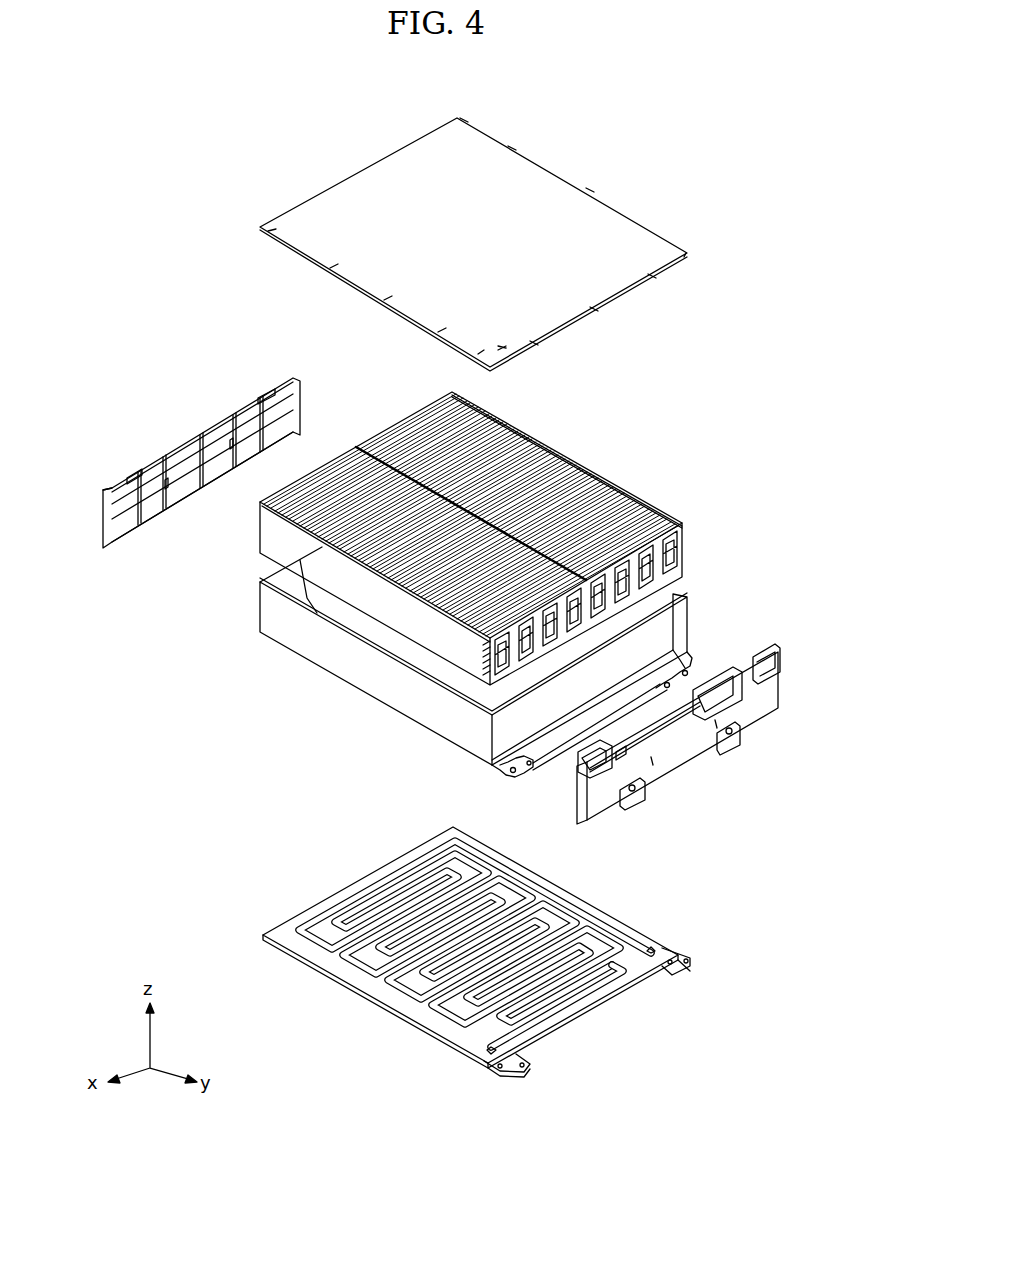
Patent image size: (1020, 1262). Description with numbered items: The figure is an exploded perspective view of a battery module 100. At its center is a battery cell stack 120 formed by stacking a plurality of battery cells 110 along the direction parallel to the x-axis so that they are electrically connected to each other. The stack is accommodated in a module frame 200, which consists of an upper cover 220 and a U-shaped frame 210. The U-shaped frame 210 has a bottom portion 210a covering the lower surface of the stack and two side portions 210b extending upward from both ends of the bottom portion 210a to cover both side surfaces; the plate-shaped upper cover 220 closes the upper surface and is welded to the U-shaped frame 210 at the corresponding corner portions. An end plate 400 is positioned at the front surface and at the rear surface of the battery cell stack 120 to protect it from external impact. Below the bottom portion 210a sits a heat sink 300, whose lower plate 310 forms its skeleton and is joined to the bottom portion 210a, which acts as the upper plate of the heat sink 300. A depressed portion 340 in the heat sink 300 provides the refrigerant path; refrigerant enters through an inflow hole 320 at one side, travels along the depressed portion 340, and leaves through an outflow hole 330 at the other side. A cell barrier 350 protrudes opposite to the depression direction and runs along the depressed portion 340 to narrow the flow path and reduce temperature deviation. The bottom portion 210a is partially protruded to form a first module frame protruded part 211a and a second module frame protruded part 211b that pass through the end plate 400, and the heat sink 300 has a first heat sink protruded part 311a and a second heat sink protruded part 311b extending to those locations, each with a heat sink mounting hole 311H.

The battery module 100 is at (207, 128).
The battery cell 110 is at (471, 538).
The battery cell stack 120 is at (600, 505).
The module frame 200 is at (750, 386).
The U-shaped frame 210 is at (270, 716).
The bottom portion 210a is at (525, 705).
The side portion 210b is at (362, 681).
The first module frame protruded part 211a is at (520, 767).
The second module frame protruded part 211b is at (690, 665).
The upper cover 220 is at (585, 210).
The heat sink 300 is at (509, 974).
The lower plate 310 is at (322, 970).
The first heat sink protruded part 311a is at (522, 1076).
The second heat sink protruded part 311b is at (674, 980).
The heat sink mounting hole 311H is at (530, 1064).
The inflow hole 320 is at (487, 1058).
The outflow hole 330 is at (665, 960).
The depressed portion 340 is at (460, 1040).
The cell barrier 350 is at (391, 990).
The end plate 400 is at (203, 425).